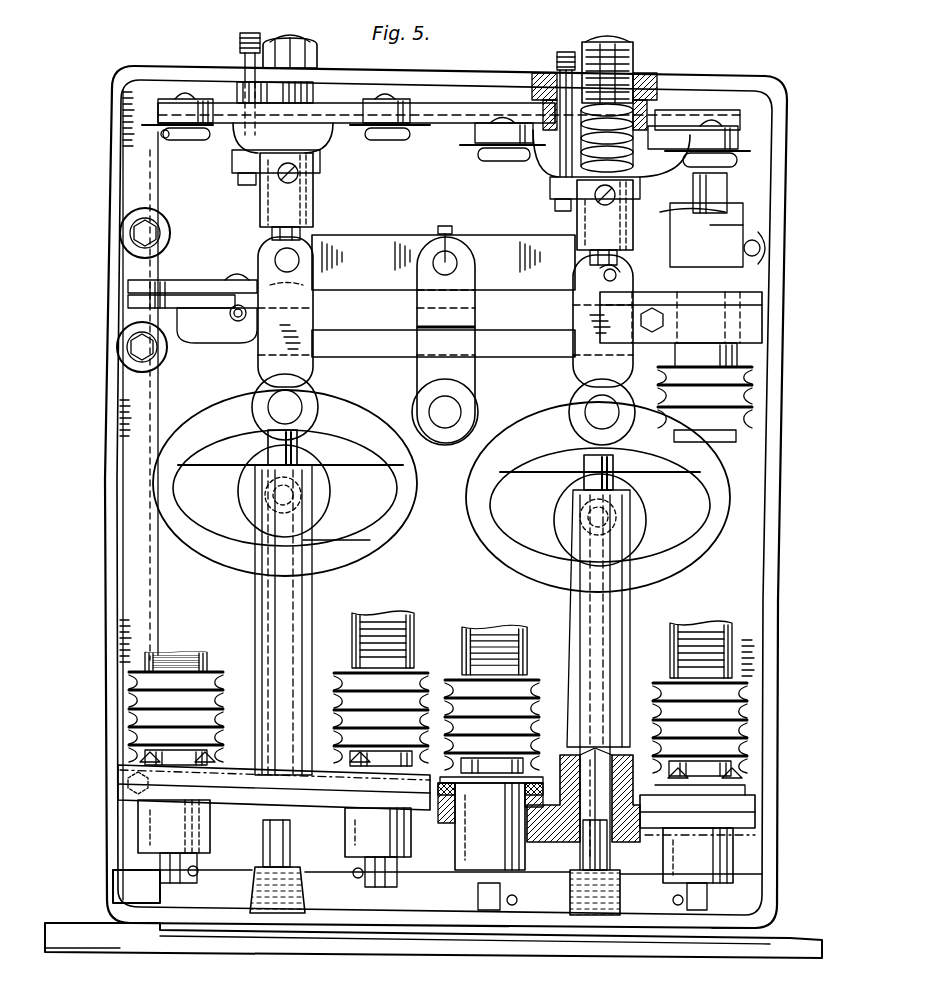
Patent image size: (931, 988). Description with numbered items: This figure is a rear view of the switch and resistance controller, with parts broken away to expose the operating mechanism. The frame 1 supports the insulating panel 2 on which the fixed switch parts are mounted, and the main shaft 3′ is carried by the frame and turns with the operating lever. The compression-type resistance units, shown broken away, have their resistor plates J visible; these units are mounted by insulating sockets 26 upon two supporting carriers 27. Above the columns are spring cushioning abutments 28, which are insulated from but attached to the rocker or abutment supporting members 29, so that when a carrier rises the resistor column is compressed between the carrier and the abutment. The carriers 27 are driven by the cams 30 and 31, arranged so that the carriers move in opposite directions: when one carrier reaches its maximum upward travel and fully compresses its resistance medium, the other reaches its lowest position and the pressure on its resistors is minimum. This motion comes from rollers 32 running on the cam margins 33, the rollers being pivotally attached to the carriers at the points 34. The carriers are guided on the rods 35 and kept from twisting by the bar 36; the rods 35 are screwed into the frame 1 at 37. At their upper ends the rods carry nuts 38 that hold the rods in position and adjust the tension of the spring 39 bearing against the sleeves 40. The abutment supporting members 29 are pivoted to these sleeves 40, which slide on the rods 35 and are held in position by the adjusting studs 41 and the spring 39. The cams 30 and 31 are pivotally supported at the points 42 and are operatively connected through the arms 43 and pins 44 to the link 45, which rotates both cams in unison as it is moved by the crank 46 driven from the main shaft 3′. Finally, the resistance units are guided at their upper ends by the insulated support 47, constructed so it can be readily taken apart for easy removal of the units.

The frame 1 is at (98, 500).
The insulating panel 2 is at (390, 501).
The shaft 3′ is at (445, 341).
The insulating sockets 26 is at (235, 768).
The supporting carriers 27 is at (242, 800).
The spring cushioning abutments 28 is at (163, 137).
The rocker or abutment supporting members 29 is at (665, 165).
The cam 30 is at (375, 548).
The cam 31 is at (512, 545).
The rollers 32 is at (331, 487).
The cam margins 33 is at (328, 543).
The points 34 is at (282, 497).
The rods 35 is at (272, 236).
The bar 36 is at (428, 820).
The attachment points 37 is at (288, 872).
The nuts 38 is at (307, 58).
The spring 39 is at (640, 120).
The sleeves 40 is at (272, 205).
The adjusting studs 41 is at (243, 60).
The points 42 is at (292, 404).
The arms 43 is at (308, 331).
The pins 44 is at (448, 252).
The link 45 is at (443, 262).
The crank 46 is at (422, 346).
The insulated support 47 is at (788, 318).
The resistor plates J is at (388, 632).